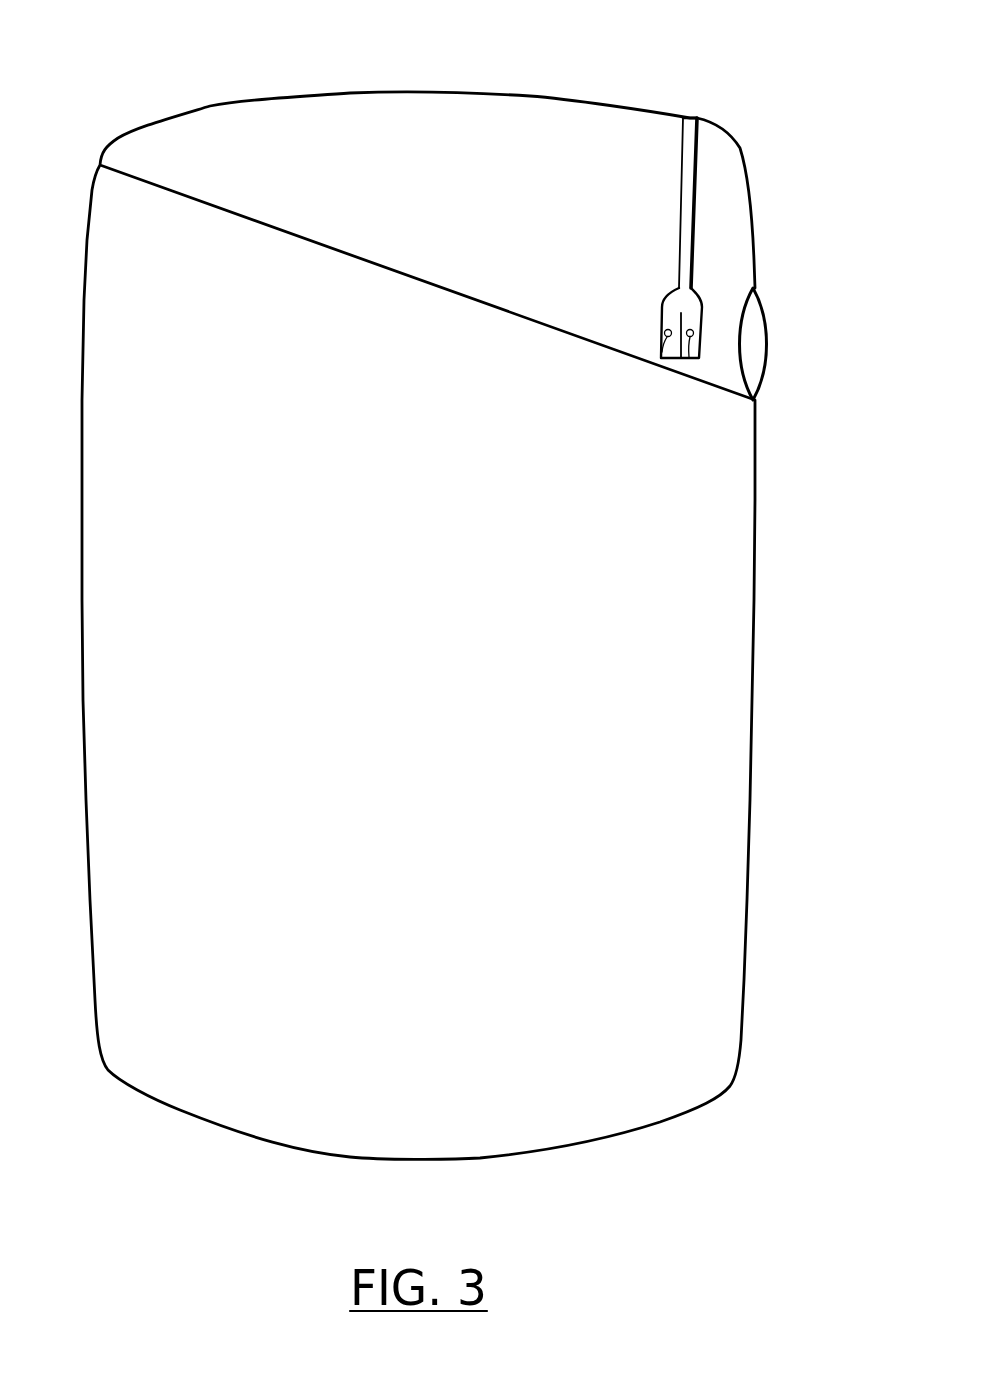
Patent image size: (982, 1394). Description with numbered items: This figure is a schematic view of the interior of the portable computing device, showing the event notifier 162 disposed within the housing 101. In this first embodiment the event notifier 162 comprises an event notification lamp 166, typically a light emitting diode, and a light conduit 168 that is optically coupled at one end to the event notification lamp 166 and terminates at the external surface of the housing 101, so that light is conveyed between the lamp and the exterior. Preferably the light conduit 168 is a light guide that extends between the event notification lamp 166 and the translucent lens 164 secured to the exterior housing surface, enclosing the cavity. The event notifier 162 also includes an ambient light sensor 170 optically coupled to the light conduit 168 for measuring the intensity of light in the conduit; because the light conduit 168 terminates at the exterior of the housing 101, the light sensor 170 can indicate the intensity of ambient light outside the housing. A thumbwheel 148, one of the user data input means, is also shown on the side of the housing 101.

The housing 101 is at (277, 97).
The thumbwheel 148 is at (770, 340).
The event notifier 162 is at (596, 282).
The translucent lens 164 is at (693, 116).
The event notification lamp 166 is at (685, 358).
The light conduit 168 is at (683, 178).
The ambient light sensor 170 is at (661, 348).